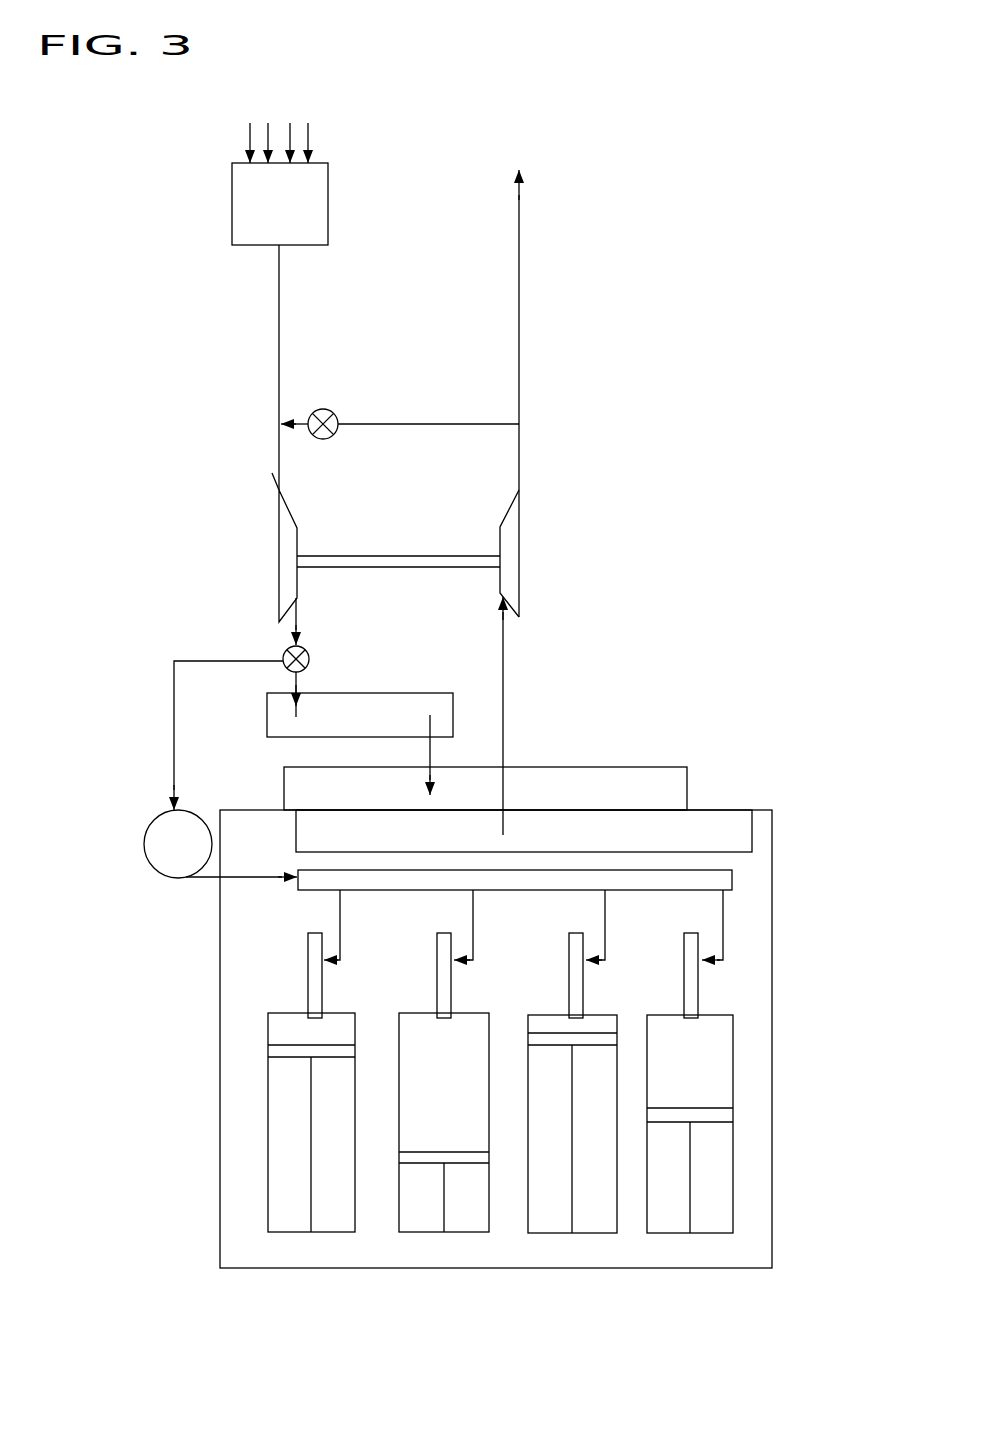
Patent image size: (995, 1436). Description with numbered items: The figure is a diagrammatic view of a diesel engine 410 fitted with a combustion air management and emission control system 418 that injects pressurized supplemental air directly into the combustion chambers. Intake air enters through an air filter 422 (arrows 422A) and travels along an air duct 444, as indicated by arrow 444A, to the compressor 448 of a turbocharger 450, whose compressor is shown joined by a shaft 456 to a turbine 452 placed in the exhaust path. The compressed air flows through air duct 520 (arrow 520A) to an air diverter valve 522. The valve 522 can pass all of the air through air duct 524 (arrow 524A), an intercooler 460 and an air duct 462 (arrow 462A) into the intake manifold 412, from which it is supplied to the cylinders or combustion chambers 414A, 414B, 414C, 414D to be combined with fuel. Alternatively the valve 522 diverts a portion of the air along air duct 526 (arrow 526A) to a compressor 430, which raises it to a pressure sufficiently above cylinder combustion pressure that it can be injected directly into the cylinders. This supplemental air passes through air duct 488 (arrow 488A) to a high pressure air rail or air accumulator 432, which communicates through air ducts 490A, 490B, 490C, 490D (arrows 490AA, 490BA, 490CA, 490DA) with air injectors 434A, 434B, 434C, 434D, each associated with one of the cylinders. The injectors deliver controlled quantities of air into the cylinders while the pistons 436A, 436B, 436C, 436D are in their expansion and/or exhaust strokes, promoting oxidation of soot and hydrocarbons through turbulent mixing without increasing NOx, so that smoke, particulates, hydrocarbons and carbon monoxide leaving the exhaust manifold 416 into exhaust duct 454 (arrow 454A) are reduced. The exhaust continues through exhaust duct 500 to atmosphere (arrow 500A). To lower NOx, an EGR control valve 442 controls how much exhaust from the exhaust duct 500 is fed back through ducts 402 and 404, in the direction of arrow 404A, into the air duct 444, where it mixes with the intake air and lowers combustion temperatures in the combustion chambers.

The duct 402 is at (433, 425).
The duct 404 is at (300, 422).
The junction arrow 404A is at (283, 422).
The diesel engine 410 is at (220, 1215).
The intake manifold 412 is at (687, 772).
The cylinder or combustion chamber 414A is at (338, 1232).
The cylinder or combustion chamber 414B is at (480, 1232).
The cylinder or combustion chamber 414C is at (590, 1233).
The cylinder or combustion chamber 414D is at (700, 1233).
The exhaust manifold 416 is at (730, 818).
The combustion air management or emission control system 418 is at (148, 488).
The air filter 422 is at (328, 196).
The controller inputs 422A is at (308, 128).
The compressor 430 is at (158, 858).
The high pressure air rail or air accumulator 432 is at (732, 880).
The air injector 434A is at (308, 986).
The air injector 434B is at (437, 1003).
The air injector 434C is at (578, 1012).
The air injector 434D is at (690, 1012).
The piston 436A is at (268, 1050).
The piston 436B is at (413, 1160).
The piston 436C is at (598, 1038).
The piston 436D is at (708, 1115).
The EGR control valve 442 is at (330, 412).
The air duct 444 is at (279, 296).
The arrow 444A is at (281, 493).
The compressor 448 is at (279, 532).
The turbocharger 450 is at (387, 537).
The right funnel 452 is at (519, 522).
The exhaust duct 454 is at (503, 680).
The return line arrow 454A is at (504, 600).
The channel 456 is at (392, 562).
The intercooler 460 is at (385, 695).
The air duct 462 is at (430, 747).
The arrow 462A is at (430, 790).
The air duct 488 is at (210, 878).
The arrow 488A is at (294, 882).
The air duct 490A is at (340, 900).
The air duct 490B is at (473, 900).
The air duct 490C is at (605, 900).
The air duct 490D is at (723, 898).
The arrow 490AA is at (331, 961).
The arrow 490BA is at (461, 961).
The arrow 490CA is at (592, 961).
The arrow 490DA is at (708, 962).
The exhaust duct 500 is at (519, 254).
The output line arrow 500A is at (519, 178).
The air duct 520 is at (297, 612).
The arrow 520A is at (290, 636).
The air diverter valve 522 is at (309, 659).
The air duct 524 is at (290, 679).
The arrow 524A is at (300, 703).
The air duct 526 is at (174, 661).
The arrow 526A is at (172, 805).